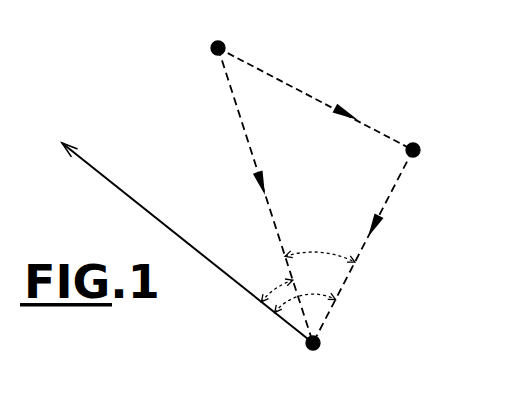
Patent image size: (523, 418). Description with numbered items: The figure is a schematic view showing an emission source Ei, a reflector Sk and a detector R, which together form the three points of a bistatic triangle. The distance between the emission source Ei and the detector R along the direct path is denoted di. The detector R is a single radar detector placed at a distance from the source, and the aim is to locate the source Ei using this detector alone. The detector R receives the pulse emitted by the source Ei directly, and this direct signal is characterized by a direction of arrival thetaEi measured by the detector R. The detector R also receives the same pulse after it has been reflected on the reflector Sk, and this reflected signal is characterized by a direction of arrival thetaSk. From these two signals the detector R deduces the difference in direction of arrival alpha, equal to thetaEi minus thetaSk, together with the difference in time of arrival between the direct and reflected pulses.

The emission source Ei is at (219, 30).
The reflector Sk is at (425, 151).
The detector R is at (313, 356).
The distance di is at (265, 195).
The difference in direction of arrival alpha is at (320, 242).
The direction of arrival of the direct signal thetaEi is at (269, 283).
The direction of arrival of the reflected signal thetaSk is at (305, 290).